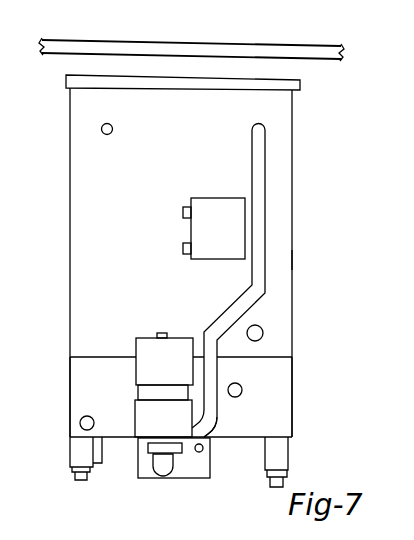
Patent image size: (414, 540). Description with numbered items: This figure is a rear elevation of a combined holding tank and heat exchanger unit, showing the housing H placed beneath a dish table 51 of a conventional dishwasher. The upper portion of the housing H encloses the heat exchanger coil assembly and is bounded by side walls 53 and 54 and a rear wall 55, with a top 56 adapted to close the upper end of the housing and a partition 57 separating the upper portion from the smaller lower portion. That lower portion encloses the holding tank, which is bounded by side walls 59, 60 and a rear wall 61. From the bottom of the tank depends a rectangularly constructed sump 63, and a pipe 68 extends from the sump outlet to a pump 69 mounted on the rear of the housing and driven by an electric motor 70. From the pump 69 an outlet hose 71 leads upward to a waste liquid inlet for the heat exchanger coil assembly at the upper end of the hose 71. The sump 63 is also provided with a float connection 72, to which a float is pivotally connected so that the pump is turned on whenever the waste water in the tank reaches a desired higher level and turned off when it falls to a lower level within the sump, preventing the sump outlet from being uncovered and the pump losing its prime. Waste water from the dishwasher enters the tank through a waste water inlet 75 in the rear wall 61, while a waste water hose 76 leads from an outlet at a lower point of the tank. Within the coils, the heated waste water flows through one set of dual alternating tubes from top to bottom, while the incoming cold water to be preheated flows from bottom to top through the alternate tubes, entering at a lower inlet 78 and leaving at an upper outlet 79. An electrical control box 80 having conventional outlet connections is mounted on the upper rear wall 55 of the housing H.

The dish table 51 is at (280, 43).
The top 56 is at (300, 85).
The side wall 53 is at (70, 233).
The side wall 54 is at (292, 164).
The rear wall 55 is at (190, 147).
The upper outlet 79 is at (105, 135).
The electrical control box 80 is at (218, 208).
The outlet hose 71 is at (233, 306).
The lower inlet 78 is at (261, 327).
The partition 57 is at (79, 355).
The side wall 59 is at (69, 378).
The electric motor 70 is at (136, 373).
The pump 69 is at (135, 413).
The waste water inlet 75 is at (242, 385).
The rear wall 61 is at (291, 396).
The side wall 60 is at (291, 423).
The waste water hose 76 is at (80, 418).
The float connection 72 is at (226, 427).
The sump 63 is at (212, 468).
The pipe 68 is at (173, 466).
The housing H is at (297, 262).